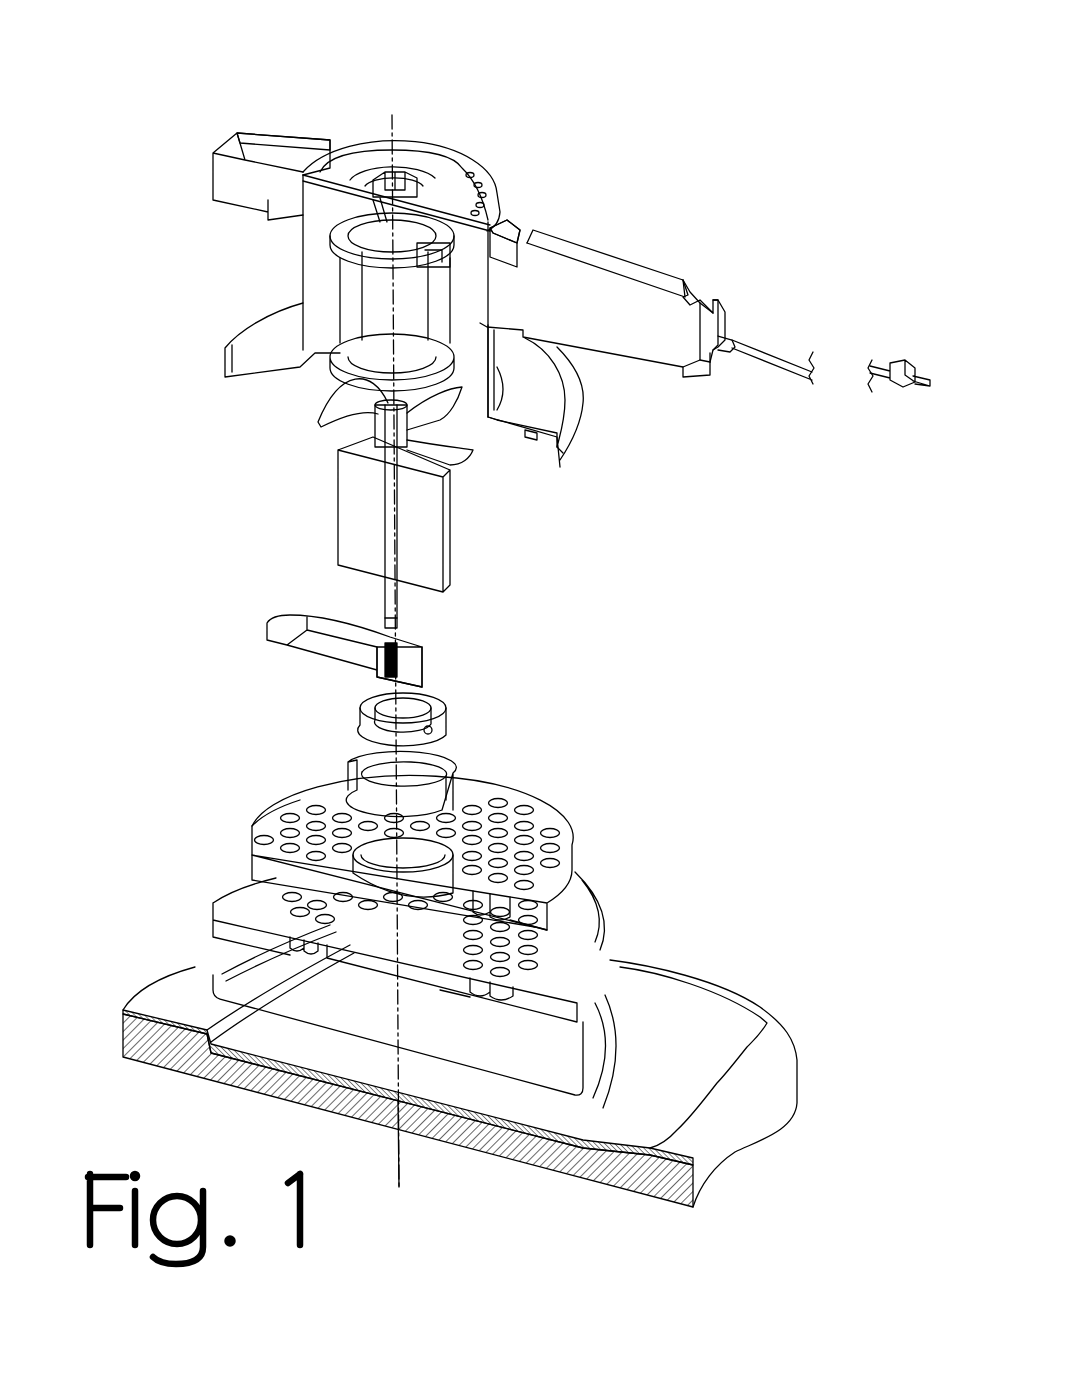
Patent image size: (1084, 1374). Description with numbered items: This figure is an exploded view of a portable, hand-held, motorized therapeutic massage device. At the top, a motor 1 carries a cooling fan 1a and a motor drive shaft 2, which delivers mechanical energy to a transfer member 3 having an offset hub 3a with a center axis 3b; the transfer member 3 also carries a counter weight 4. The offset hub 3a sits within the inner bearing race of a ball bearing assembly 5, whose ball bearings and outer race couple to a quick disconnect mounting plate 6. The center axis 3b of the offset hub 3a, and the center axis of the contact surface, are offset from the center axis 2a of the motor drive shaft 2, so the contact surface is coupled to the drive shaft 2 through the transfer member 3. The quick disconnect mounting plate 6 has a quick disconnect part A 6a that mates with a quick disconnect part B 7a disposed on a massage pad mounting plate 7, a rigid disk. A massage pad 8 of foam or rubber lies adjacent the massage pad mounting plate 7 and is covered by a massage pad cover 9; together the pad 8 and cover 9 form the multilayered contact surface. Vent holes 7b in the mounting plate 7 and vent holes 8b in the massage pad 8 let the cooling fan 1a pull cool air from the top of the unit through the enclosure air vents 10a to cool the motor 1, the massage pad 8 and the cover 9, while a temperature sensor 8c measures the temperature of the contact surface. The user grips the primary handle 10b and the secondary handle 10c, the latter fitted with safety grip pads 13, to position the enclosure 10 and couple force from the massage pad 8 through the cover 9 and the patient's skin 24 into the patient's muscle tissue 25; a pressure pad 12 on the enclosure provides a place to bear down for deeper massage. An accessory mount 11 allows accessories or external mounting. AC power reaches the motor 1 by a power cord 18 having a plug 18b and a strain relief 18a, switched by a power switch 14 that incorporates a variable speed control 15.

The motor 1 is at (338, 487).
The cooling fan 1a is at (320, 403).
The motor drive shaft 2 is at (386, 537).
The center axis of the motor drive shaft 2a is at (385, 688).
The transfer member 3 is at (357, 652).
The offset hub 3a is at (432, 650).
The center axis of the offset hub 3b is at (395, 1148).
The counter weight 4 is at (265, 623).
The ball bearing assembly 5 is at (452, 715).
The quick disconnect mounting plate 6 is at (470, 788).
The quick disconnect part A 6a is at (447, 797).
The massage pad mounting plate 7 is at (248, 827).
The quick disconnect part B 7a is at (292, 832).
The vent holes 7b is at (543, 903).
The massage pad 8 is at (237, 905).
The vent holes 8b is at (523, 960).
The temperature sensor 8c is at (535, 440).
The massage pad cover 9 is at (215, 984).
The enclosure 10 is at (300, 270).
The enclosure air vents 10a is at (470, 175).
The primary handle 10b is at (718, 300).
The secondary handle 10c is at (245, 130).
The accessory mount 11 is at (390, 175).
The pressure pad 12 is at (425, 140).
The safety grip pads 13 is at (212, 142).
The power switch 14 is at (513, 235).
The variable speed control 15 is at (505, 231).
The power cord 18 is at (780, 365).
The strain relief 18a is at (735, 335).
The plug 18b is at (912, 370).
The patient's skin 24 is at (672, 1138).
The patient's muscle tissue 25 is at (608, 1190).